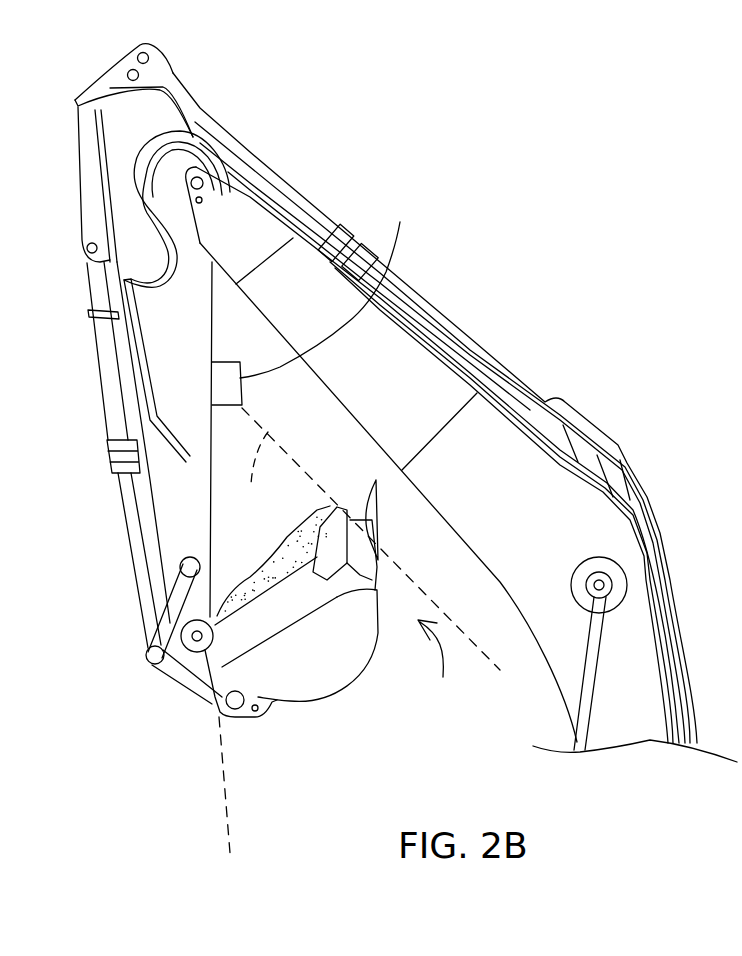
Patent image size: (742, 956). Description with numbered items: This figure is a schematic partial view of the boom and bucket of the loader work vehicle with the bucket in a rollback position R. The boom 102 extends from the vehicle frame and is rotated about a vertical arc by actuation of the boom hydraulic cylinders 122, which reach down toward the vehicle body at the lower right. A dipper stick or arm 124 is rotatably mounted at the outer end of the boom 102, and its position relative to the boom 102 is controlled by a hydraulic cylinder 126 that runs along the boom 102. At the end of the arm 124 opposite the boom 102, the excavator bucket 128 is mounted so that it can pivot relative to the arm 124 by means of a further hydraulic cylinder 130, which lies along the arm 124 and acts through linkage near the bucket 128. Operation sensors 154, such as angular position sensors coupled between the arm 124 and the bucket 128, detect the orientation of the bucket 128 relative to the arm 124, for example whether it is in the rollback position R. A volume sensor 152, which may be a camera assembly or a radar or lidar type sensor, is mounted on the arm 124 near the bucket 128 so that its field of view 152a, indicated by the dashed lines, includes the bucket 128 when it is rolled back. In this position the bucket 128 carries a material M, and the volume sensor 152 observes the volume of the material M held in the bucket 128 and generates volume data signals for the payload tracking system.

The boom 102 is at (402, 372).
The boom hydraulic cylinders 122 is at (587, 682).
The dipper stick or arm 124 is at (176, 327).
The hydraulic cylinder 126 is at (230, 140).
The bucket 128 is at (333, 700).
The hydraulic cylinder 130 is at (103, 398).
The volume sensor 152 is at (370, 433).
The field of view 152a is at (255, 475).
The operation sensors 154 is at (152, 670).
The material M is at (263, 583).
The rollback position R is at (433, 666).